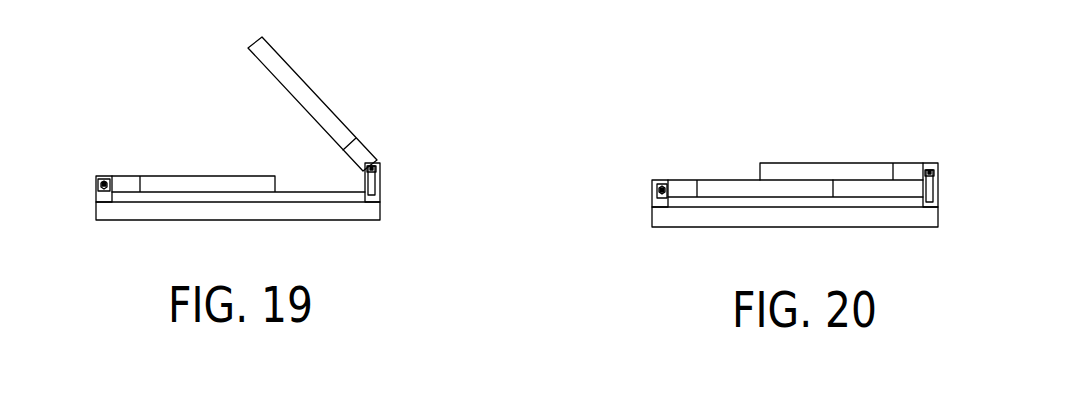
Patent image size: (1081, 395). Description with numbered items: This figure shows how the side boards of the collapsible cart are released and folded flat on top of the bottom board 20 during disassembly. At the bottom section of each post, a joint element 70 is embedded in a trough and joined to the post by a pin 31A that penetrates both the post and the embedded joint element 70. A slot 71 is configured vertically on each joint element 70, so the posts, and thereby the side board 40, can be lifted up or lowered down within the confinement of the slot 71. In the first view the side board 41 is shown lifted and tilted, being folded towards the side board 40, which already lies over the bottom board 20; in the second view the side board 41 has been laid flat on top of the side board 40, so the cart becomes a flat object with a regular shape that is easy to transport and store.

In FIG. 19, the bottom board 20 is at (233, 215).
In FIG. 20, the bottom board 20 is at (788, 220).
In FIG. 19, the side board 40 is at (187, 183).
In FIG. 20, the side board 40 is at (743, 188).
In FIG. 19, the side board 41 is at (305, 90).
In FIG. 20, the side board 41 is at (810, 173).
In FIG. 19, the joint element 70 is at (97, 198).
In FIG. 20, the joint element 70 is at (652, 200).
In FIG. 19, the slot 71 is at (98, 190).
In FIG. 20, the slot 71 is at (658, 192).
In FIG. 19, the pin 31A is at (100, 180).
In FIG. 20, the pin 31A is at (653, 183).